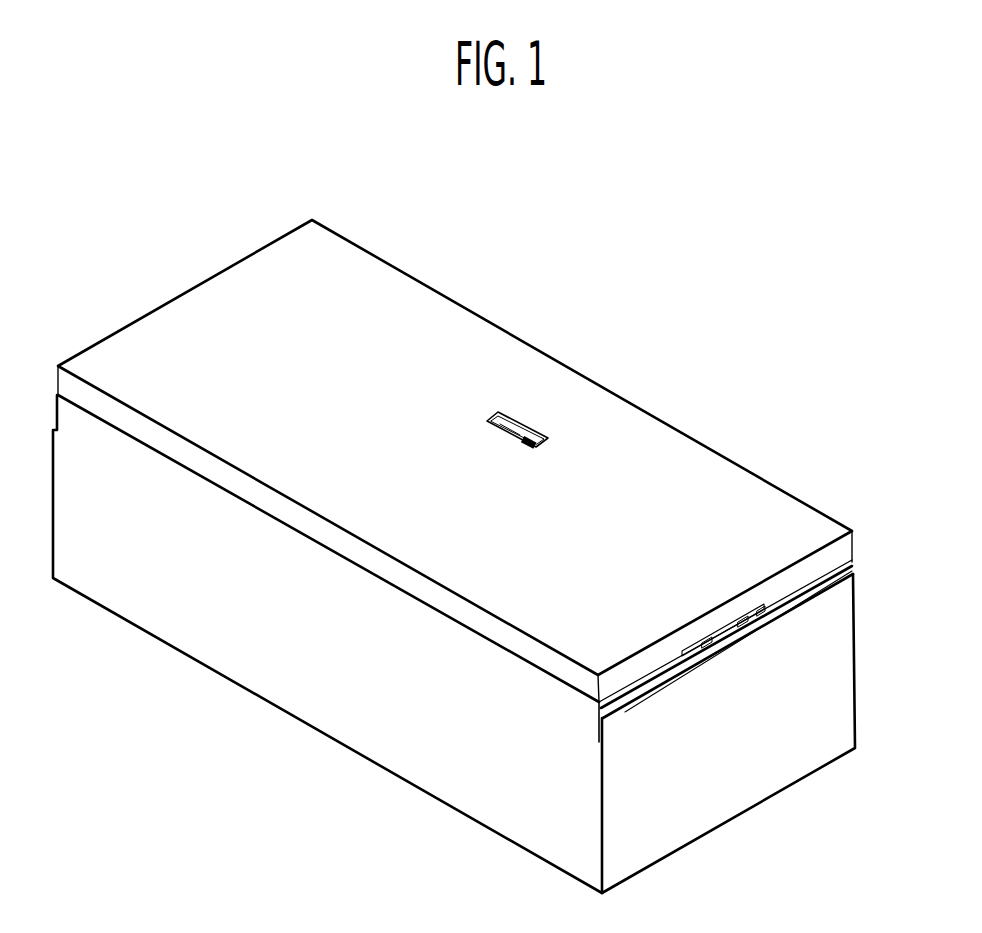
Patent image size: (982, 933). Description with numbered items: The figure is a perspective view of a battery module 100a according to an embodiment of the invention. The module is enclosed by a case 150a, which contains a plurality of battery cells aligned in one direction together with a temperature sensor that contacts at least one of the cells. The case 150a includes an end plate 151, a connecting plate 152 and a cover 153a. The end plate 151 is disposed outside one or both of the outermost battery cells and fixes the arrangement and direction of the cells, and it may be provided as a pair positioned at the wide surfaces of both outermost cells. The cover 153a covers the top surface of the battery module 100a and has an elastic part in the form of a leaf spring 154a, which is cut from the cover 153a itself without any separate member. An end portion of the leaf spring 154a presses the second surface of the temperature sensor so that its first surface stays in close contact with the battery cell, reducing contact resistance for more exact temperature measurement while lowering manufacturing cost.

The battery module 100a is at (701, 262).
The case 150a is at (444, 908).
The end plate 151 is at (628, 802).
The connecting plate 152 is at (411, 763).
The cover 153a is at (350, 523).
The leaf spring 154a is at (520, 432).